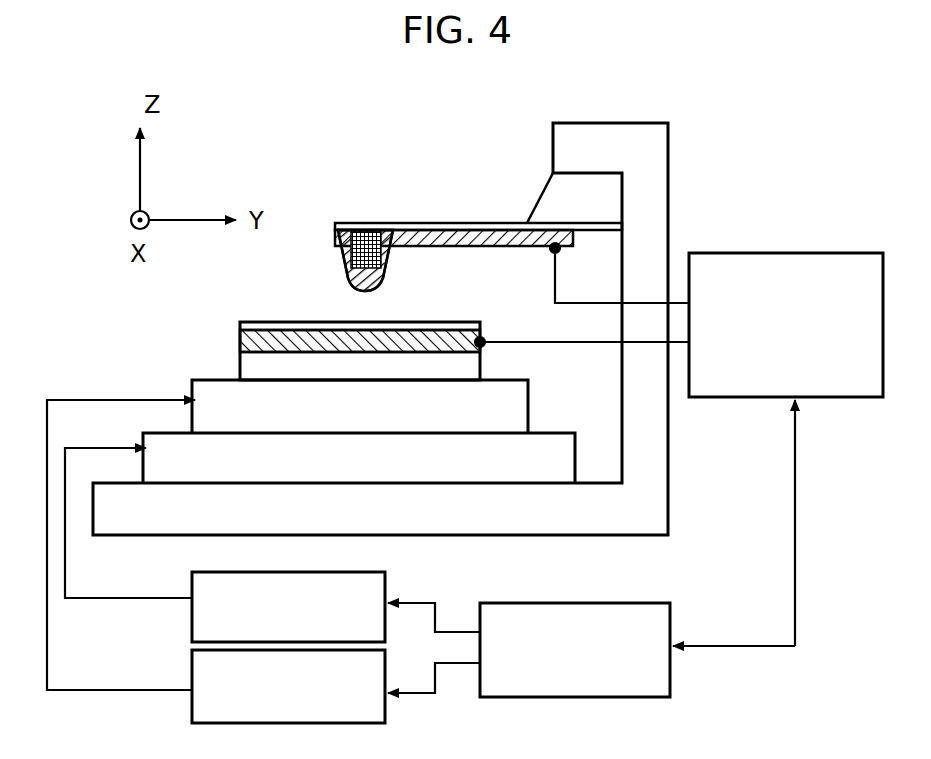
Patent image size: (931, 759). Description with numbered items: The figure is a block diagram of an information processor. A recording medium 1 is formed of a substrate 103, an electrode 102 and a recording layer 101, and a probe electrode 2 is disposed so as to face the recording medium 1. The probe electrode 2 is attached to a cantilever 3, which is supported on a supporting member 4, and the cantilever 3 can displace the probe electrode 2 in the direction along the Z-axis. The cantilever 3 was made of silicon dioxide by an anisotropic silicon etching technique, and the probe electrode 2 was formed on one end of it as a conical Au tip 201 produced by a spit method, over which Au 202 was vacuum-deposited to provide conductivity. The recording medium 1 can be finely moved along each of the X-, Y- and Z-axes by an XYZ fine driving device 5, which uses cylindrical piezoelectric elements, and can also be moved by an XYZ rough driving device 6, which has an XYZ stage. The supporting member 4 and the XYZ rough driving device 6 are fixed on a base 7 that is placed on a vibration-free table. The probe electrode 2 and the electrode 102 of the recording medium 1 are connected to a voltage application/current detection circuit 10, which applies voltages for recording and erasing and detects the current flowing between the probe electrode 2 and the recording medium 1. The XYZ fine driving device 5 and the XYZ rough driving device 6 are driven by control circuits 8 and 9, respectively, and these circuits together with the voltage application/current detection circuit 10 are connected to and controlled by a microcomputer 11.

The recording medium 1 is at (136, 293).
The recording layer 101 is at (312, 313).
The electrode 102 is at (312, 339).
The substrate 103 is at (312, 365).
The probe electrode 2 is at (238, 237).
The conical Au tip 201 is at (347, 250).
The Au 202 is at (357, 287).
The cantilever 3 is at (423, 223).
The supporting member 4 is at (548, 203).
The XYZ fine driving device 5 is at (512, 407).
The XYZ rough driving device 6 is at (563, 451).
The base 7 is at (655, 483).
The control circuit 8 is at (301, 681).
The control circuit 9 is at (301, 597).
The voltage application/current detection circuit 10 is at (786, 308).
The microcomputer 11 is at (575, 635).